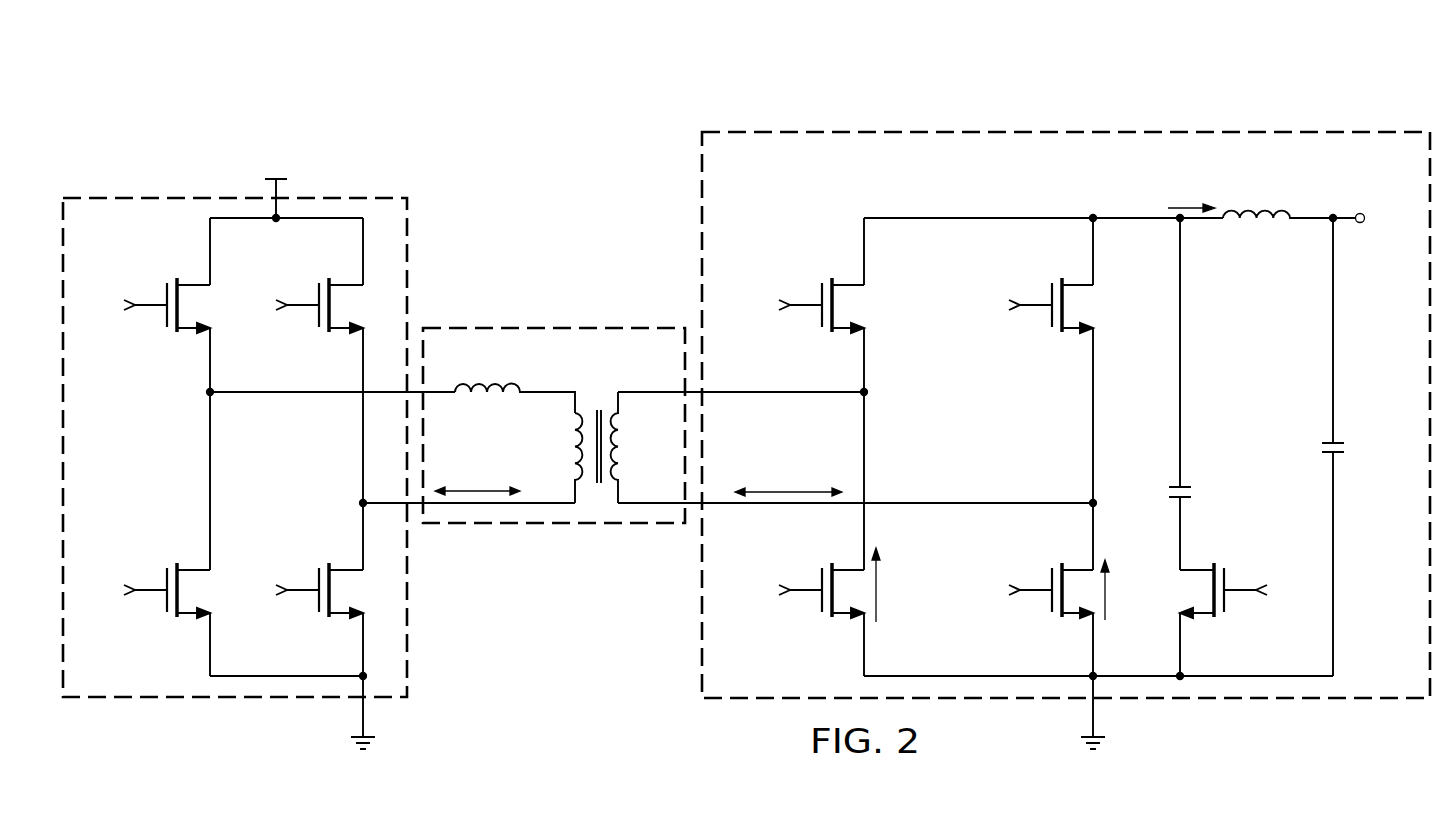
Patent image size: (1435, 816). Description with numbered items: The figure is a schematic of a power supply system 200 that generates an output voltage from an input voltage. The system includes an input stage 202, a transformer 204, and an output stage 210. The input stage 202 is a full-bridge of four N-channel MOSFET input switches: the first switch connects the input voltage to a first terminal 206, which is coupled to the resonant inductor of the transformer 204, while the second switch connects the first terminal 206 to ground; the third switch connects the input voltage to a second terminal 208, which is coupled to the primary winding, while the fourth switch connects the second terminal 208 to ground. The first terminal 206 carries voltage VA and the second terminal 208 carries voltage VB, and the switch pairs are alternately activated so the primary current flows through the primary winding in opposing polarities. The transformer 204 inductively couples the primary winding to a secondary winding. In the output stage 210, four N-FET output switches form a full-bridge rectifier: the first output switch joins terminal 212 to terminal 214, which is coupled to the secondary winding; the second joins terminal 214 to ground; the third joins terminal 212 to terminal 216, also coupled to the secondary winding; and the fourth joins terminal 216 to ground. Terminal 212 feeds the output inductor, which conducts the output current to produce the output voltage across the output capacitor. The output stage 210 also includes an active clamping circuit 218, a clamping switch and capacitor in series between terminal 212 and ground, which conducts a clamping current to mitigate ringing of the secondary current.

The power supply system 200 is at (497, 88).
The input stage 202 is at (195, 193).
The transformer 204 is at (524, 323).
The first terminal 206 is at (208, 391).
The second terminal 208 is at (362, 502).
The output stage 210 is at (1146, 125).
The terminal 212 is at (1093, 215).
The terminal 214 is at (868, 391).
The terminal 216 is at (1091, 501).
The active clamping circuit 218 is at (1256, 493).